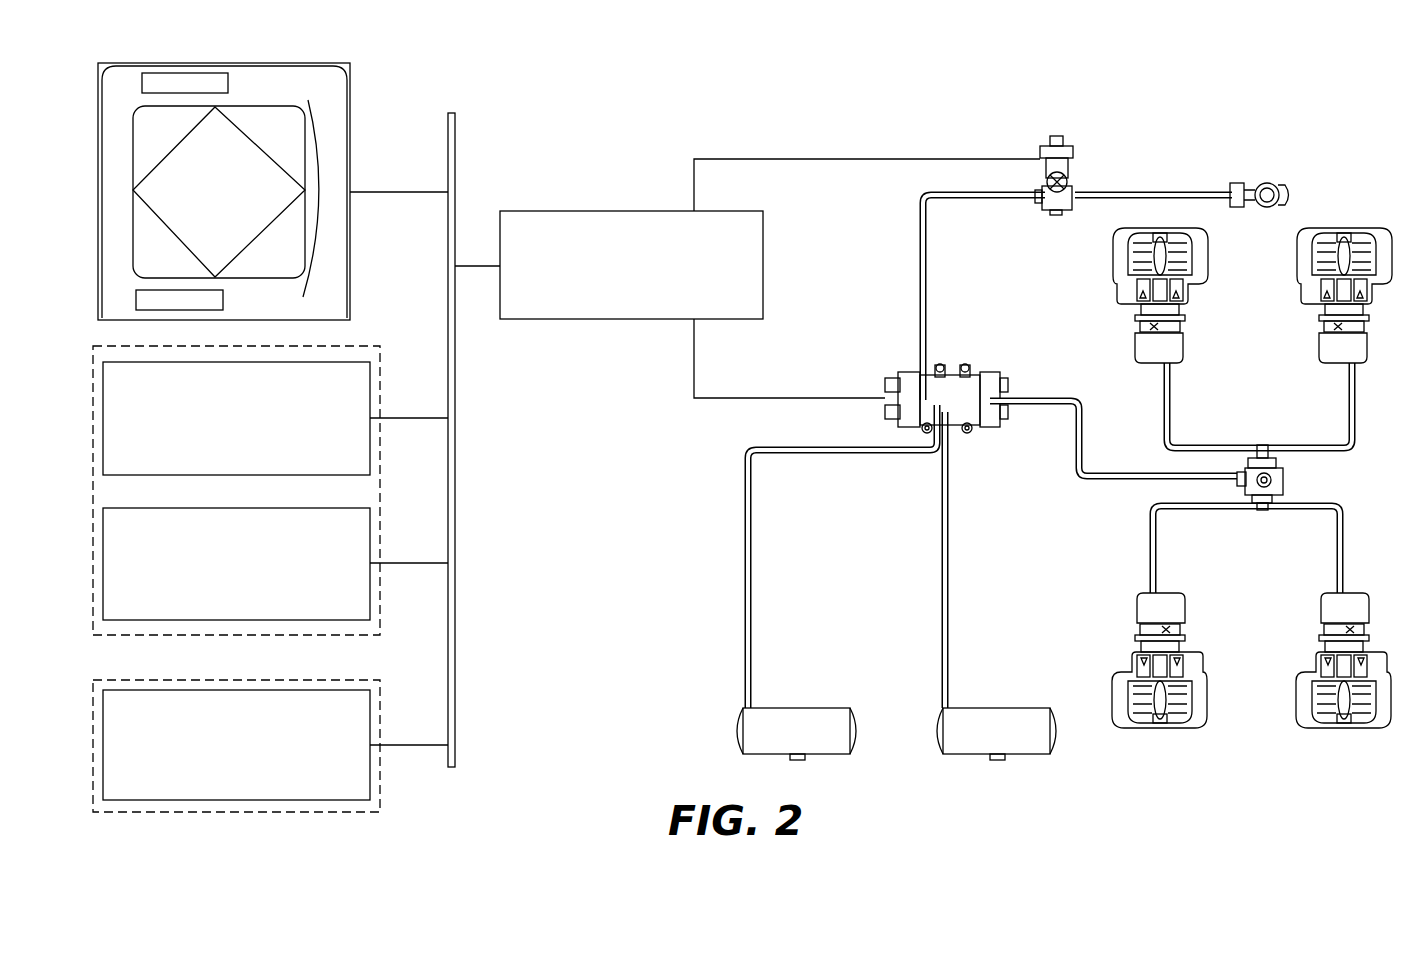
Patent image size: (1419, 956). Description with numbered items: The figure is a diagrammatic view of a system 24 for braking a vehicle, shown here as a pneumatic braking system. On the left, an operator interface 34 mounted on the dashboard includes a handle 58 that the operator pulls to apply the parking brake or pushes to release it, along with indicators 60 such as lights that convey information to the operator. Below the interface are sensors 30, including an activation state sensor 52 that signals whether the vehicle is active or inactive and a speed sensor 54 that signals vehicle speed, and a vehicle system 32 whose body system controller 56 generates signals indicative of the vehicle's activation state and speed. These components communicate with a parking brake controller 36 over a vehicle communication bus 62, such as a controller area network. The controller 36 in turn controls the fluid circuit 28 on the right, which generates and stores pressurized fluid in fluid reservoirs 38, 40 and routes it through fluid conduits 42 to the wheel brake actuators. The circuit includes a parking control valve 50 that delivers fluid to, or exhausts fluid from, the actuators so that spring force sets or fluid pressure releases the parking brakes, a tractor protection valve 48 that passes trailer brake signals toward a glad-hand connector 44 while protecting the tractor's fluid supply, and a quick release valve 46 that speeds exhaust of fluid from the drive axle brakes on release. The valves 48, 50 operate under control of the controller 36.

The braking system 24 is at (606, 155).
The fluid circuit 28 is at (1152, 152).
The sensors 30 is at (380, 635).
The vehicle systems 32 is at (380, 812).
The operator interface 34 is at (338, 108).
The controller 36 is at (600, 318).
The fluid reservoir 38 is at (833, 745).
The fluid reservoir 40 is at (1037, 745).
The fluid conduits 42 is at (1078, 478).
The glad-hand connector 44 is at (1283, 188).
The quick release valve 46 is at (1266, 476).
The tractor protection valve 48 is at (1053, 140).
The parking control valve 50 is at (980, 375).
The activation state sensor 52 is at (342, 442).
The speed sensor 54 is at (263, 603).
The controller 56 is at (237, 788).
The handle 58 is at (290, 190).
The indicator 60 is at (198, 78).
The vehicle communication bus 62 is at (455, 452).